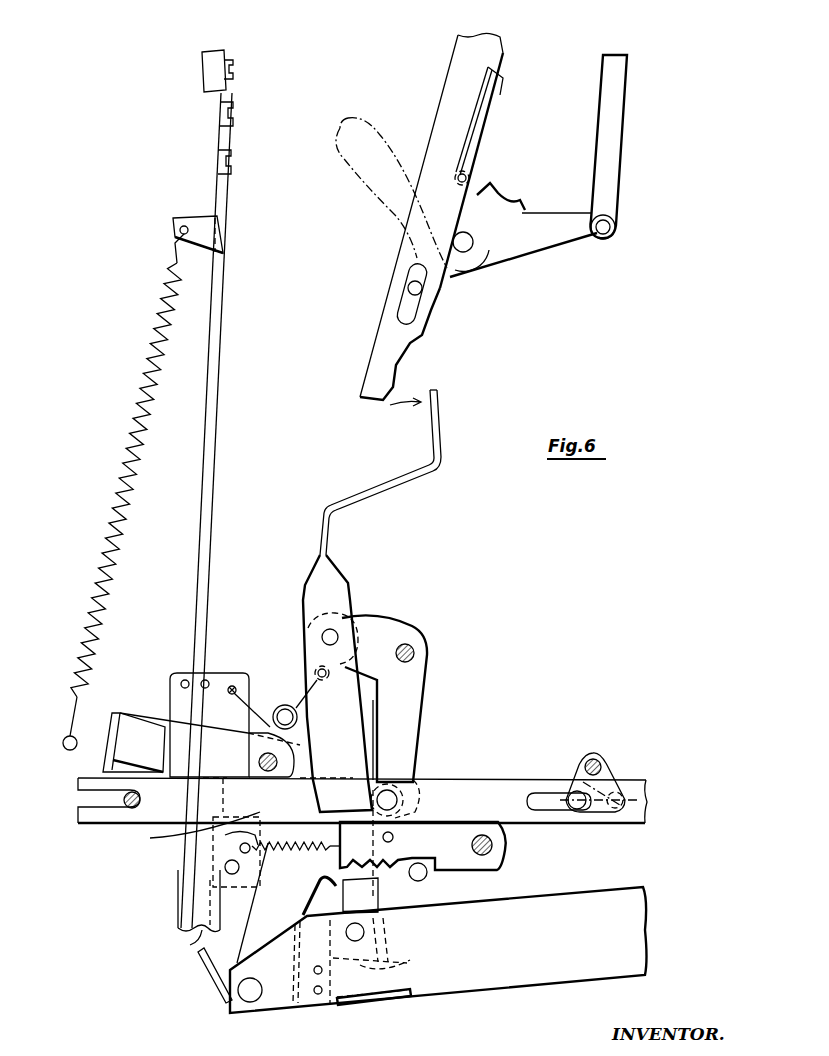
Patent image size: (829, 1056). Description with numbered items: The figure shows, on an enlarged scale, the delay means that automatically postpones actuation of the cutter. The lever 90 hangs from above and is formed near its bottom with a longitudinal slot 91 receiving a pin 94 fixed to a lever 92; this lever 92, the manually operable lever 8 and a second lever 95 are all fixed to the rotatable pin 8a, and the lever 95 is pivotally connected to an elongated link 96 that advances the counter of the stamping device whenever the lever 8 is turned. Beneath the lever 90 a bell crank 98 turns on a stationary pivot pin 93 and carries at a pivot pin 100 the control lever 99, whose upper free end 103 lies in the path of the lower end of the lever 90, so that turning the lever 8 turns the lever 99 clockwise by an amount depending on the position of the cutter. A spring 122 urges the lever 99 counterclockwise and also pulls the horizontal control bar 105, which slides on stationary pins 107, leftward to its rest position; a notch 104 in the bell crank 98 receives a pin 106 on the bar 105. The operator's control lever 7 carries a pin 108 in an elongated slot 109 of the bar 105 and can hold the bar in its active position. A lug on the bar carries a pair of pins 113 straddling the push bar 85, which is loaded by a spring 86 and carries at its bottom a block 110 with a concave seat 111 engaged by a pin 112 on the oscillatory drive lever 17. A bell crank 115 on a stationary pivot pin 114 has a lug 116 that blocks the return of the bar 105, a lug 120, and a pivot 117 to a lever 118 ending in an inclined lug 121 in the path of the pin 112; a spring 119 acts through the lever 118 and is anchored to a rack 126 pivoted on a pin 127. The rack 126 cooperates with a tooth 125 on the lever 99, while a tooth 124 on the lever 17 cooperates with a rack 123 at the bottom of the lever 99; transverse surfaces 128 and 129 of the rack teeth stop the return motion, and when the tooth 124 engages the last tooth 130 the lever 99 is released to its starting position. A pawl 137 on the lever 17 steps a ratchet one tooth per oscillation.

The control lever 7 is at (594, 757).
The manually operable lever 8 is at (342, 132).
The pin 8a is at (466, 235).
The oscillatory drive lever 17 is at (580, 977).
The push bar 85 is at (213, 392).
The spring 86 is at (143, 407).
The lever 90 is at (452, 122).
The longitudinal slot 91 is at (398, 323).
The lever 92 is at (450, 280).
The stationary pivot pin 93 is at (413, 650).
The pin 94 is at (410, 290).
The second lever 95 is at (535, 245).
The elongated link 96 is at (610, 112).
The bell crank 98 is at (380, 632).
The control lever 99 is at (333, 570).
The pivot pin 100 is at (337, 633).
The upper free end 103 is at (433, 427).
The notch 104 is at (410, 780).
The control bar 105 is at (530, 815).
The pin 106 is at (398, 800).
The stationary pins 107 is at (128, 810).
The pin 108 is at (582, 805).
The elongated slot 109 is at (553, 797).
The block 110 is at (195, 900).
The concave surface 111 is at (192, 938).
The pin 112 is at (256, 993).
The pair of pins 113 is at (205, 680).
The stationary pivot pin 114 is at (300, 745).
The bell crank 115 is at (138, 733).
The lug 116 is at (108, 744).
The pivot 117 is at (220, 862).
The lever 118 is at (238, 918).
The spring 119 is at (293, 840).
The lug 120 is at (191, 829).
The inclined lug 121 is at (205, 968).
The spring 122 is at (283, 703).
The rack 123 is at (385, 1005).
The tooth 124 is at (340, 932).
The tooth 125 is at (318, 886).
The rack 126 is at (448, 864).
The pin 127 is at (492, 855).
The tooth surfaces 128 is at (400, 950).
The tooth surfaces 129 is at (322, 857).
The last tooth 130 is at (314, 970).
The pawl 137 is at (373, 907).